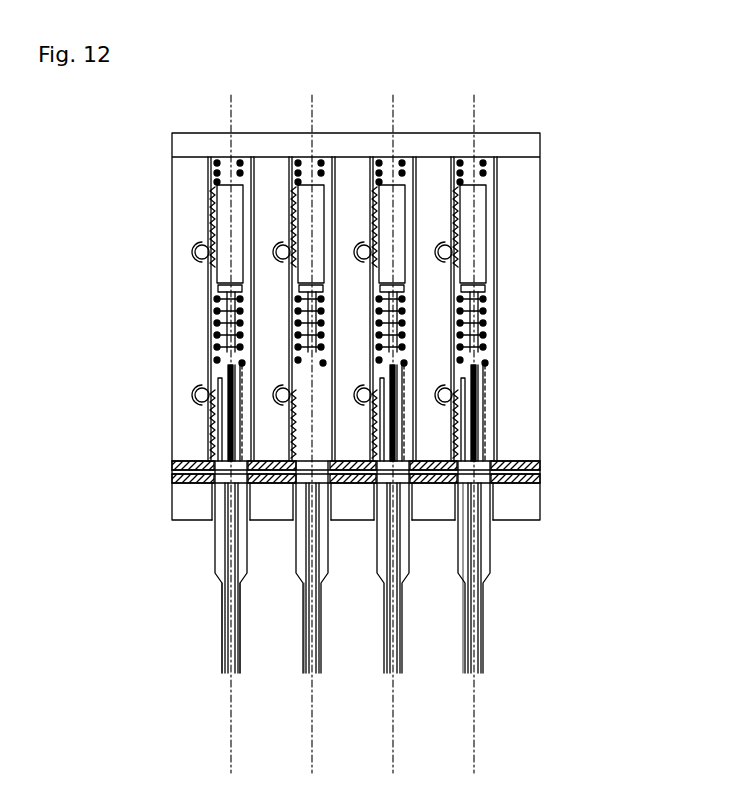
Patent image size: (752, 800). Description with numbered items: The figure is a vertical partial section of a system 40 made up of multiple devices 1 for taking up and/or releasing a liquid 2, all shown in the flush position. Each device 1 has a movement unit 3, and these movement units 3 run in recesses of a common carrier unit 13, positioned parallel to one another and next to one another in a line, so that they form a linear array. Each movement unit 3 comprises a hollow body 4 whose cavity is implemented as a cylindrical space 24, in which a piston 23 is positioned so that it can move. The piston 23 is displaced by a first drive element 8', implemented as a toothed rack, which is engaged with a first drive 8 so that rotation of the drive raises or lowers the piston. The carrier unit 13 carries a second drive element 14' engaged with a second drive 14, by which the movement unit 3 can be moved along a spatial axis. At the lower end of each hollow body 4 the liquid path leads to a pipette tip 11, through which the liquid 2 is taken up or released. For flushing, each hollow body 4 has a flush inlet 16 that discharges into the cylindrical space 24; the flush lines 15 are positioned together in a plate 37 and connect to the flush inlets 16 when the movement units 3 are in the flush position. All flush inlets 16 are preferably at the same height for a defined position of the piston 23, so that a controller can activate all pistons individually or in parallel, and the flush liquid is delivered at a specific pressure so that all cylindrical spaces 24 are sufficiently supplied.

The device 1 is at (241, 108).
The liquid 2 is at (303, 665).
The movement unit 3 is at (548, 183).
The hollow body 4 is at (220, 552).
The first drive 8 is at (152, 235).
The first drive element 8' is at (169, 237).
The pipette tip 11 is at (223, 672).
The carrier unit 13 is at (200, 336).
The second drive 14 is at (152, 386).
The second drive element 14' is at (155, 424).
The flush line 15 is at (183, 472).
The flush inlet 16 is at (173, 463).
The piston 23 is at (217, 378).
The cylindrical space 24 is at (467, 538).
The plate 37 is at (538, 476).
The system 40 is at (634, 241).